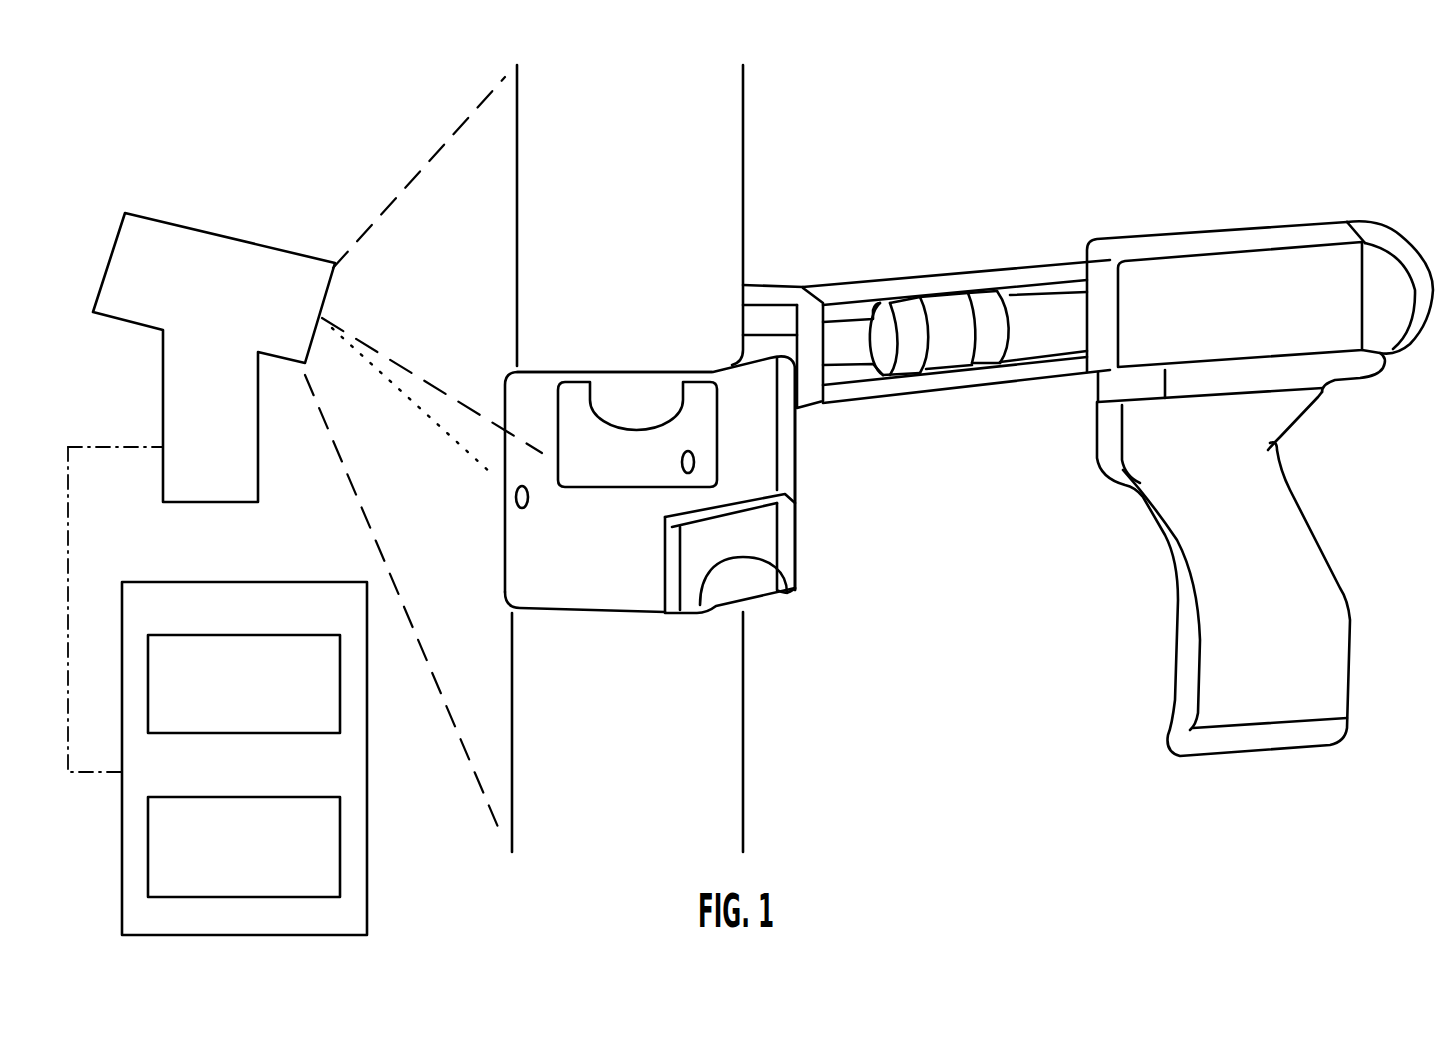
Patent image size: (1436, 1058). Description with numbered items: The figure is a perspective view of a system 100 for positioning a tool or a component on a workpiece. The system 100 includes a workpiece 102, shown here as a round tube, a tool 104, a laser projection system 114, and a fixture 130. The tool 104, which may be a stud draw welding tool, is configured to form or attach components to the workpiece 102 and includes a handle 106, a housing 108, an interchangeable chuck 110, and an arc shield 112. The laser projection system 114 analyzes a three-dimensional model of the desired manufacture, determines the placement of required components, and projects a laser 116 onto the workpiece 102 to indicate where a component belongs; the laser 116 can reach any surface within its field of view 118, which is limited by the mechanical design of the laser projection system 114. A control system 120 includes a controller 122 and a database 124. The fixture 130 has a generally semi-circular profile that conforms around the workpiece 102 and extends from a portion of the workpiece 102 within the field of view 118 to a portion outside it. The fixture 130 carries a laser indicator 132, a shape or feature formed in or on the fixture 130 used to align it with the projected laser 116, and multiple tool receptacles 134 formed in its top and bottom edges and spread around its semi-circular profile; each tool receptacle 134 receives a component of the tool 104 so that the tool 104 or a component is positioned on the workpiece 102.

The system 100 is at (1210, 105).
The workpiece 102 is at (652, 192).
The tool 104 is at (1278, 168).
The handle 106 is at (1290, 582).
The housing 108 is at (1244, 303).
The interchangeable chuck 110 is at (928, 292).
The arc shield 112 is at (755, 297).
The laser projection system 114 is at (226, 309).
The laser 116 is at (403, 395).
The field of view 118 is at (400, 585).
The control system 120 is at (250, 580).
The controller 122 is at (244, 684).
The database 124 is at (244, 847).
The fixture 130 is at (782, 473).
The laser indicator 132 is at (683, 474).
The tool receptacle 134 is at (653, 463).